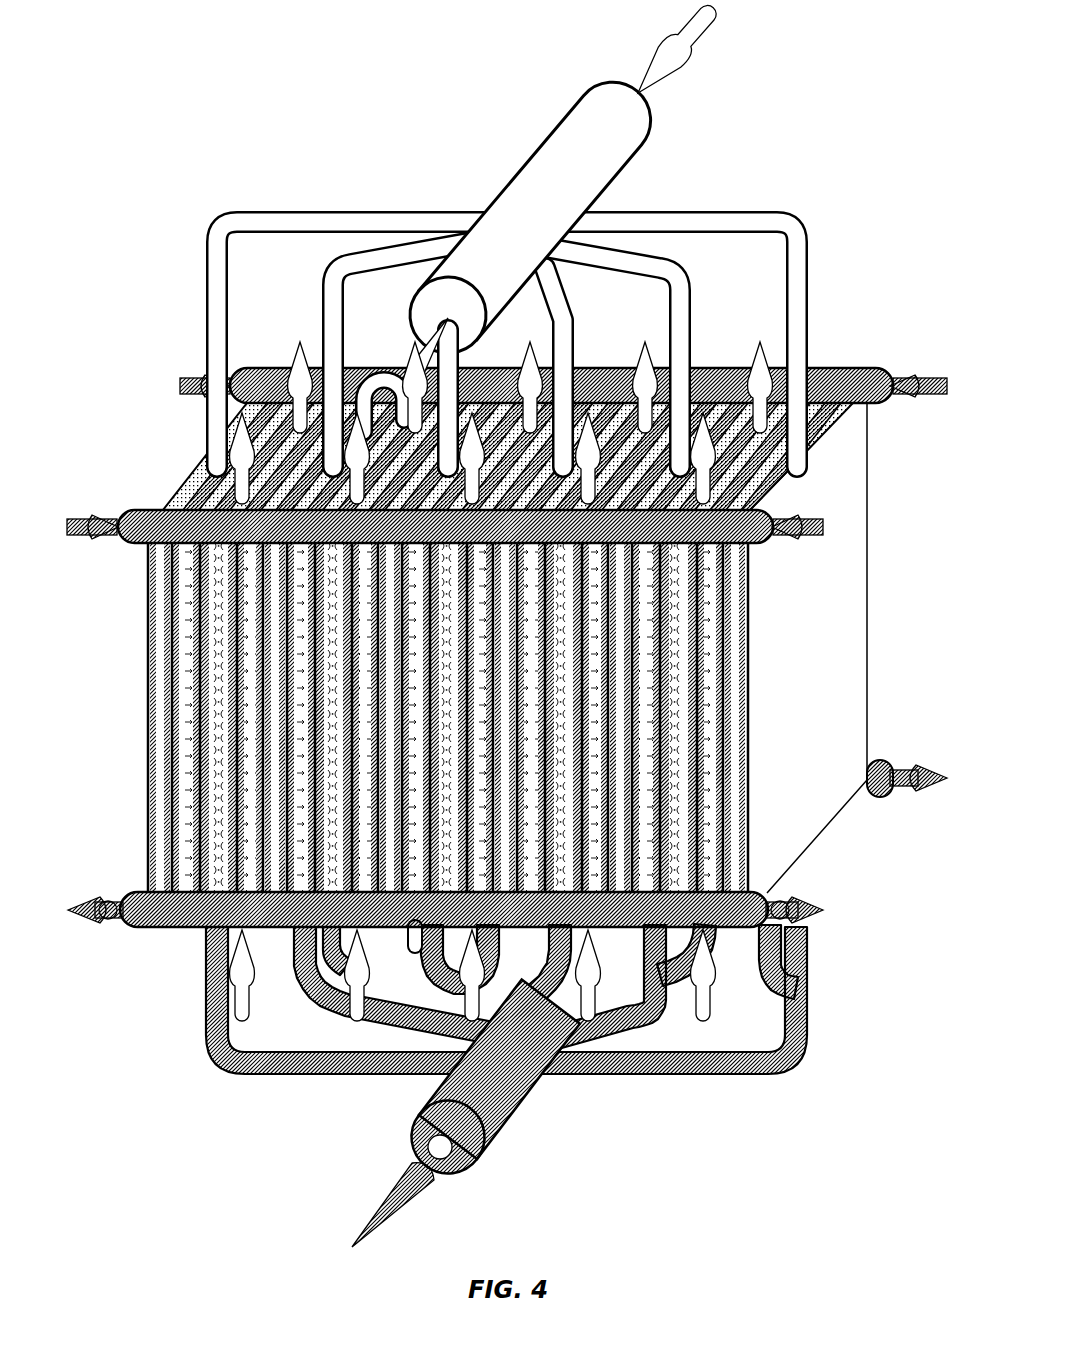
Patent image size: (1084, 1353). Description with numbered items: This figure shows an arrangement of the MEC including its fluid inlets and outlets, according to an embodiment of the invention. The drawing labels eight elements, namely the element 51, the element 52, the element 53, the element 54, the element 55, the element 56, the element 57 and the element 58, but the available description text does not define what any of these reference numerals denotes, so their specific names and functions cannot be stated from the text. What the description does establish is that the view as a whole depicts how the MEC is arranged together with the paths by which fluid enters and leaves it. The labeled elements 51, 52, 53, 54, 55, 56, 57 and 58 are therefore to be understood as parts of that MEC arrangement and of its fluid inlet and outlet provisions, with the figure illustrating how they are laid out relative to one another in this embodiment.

The header 51 is at (183, 506).
The plate 52 is at (180, 489).
The inlet conduit 53 is at (668, 43).
The outlet conduit 54 is at (420, 1194).
The inlet ports 55 is at (183, 384).
The outlet ports 56 is at (122, 925).
The outlet flow arrows 57 is at (473, 975).
The inlet flow arrows 58 is at (501, 423).